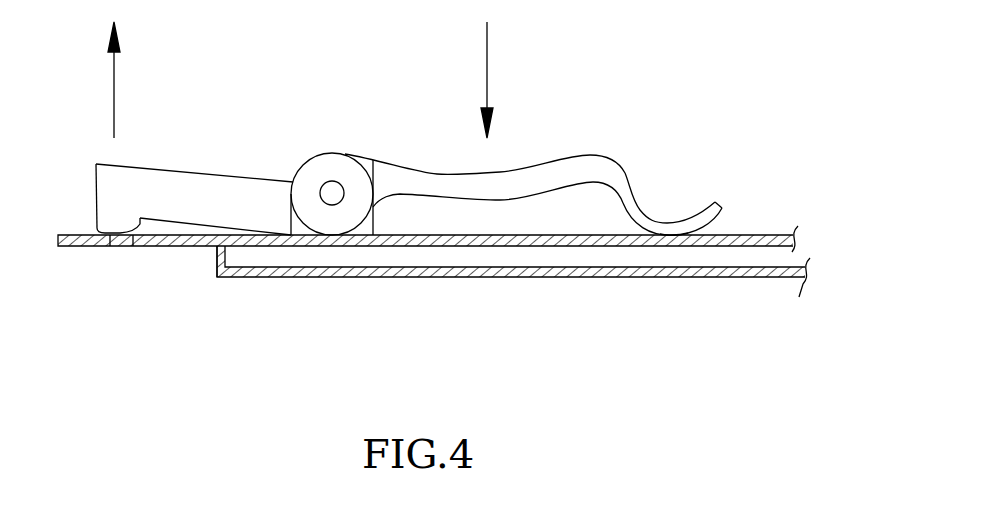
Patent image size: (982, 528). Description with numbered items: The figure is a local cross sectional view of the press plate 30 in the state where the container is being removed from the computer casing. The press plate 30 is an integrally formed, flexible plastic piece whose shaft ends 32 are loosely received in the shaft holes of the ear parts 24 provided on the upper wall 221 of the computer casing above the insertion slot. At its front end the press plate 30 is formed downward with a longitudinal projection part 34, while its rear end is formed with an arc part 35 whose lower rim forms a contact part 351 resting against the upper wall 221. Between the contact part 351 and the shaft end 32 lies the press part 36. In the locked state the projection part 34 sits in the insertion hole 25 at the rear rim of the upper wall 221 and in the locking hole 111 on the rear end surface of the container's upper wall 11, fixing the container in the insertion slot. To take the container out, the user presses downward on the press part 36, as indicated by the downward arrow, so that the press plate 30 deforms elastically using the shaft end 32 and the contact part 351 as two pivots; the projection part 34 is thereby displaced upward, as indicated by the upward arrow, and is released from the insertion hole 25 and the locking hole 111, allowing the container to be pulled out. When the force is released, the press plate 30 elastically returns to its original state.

The upper wall 11 is at (552, 277).
The locking hole 111 is at (122, 248).
The upper wall 221 is at (747, 235).
The ear part 24 is at (317, 170).
The insertion hole 25 is at (135, 236).
The press plate 30 is at (437, 166).
The shaft end 32 is at (327, 190).
The projection part 34 is at (112, 233).
The arc part 35 is at (625, 173).
The contact part 351 is at (677, 236).
The press part 36 is at (493, 173).